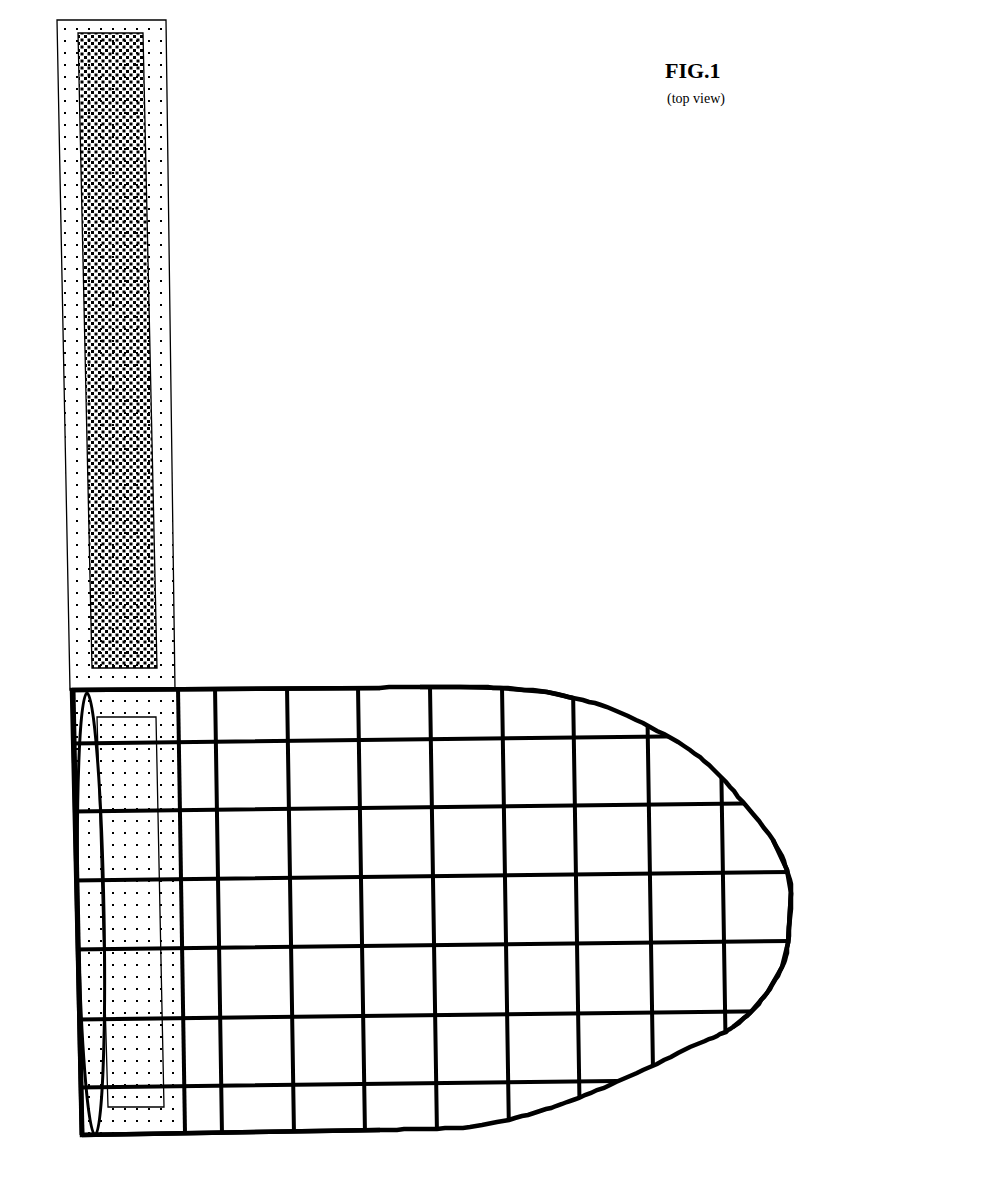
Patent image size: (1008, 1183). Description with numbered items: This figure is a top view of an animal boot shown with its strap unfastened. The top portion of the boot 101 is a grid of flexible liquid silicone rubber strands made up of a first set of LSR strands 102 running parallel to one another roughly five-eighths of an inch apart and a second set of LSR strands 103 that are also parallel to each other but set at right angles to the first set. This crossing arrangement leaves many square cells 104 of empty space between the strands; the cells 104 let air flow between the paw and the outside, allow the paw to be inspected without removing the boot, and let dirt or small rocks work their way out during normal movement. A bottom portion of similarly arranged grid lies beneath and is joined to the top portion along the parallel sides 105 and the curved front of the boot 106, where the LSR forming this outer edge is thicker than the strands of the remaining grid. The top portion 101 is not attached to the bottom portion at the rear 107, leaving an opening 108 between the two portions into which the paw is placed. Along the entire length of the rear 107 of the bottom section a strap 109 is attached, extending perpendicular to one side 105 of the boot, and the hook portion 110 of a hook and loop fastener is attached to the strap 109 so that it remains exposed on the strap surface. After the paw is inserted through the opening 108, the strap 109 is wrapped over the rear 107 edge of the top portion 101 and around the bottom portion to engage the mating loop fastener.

The top portion of the boot 101 is at (558, 695).
The first set of LSR strands 102 is at (547, 689).
The second set of LSR strands 103 is at (752, 1012).
The square cells 104 is at (680, 837).
The parallel sides 105 is at (400, 1126).
The curved front of the boot 106 is at (788, 864).
The rear of the boot 107 is at (68, 918).
The opening 108 is at (93, 977).
The strap 109 is at (118, 447).
The hook portion 110 is at (127, 177).